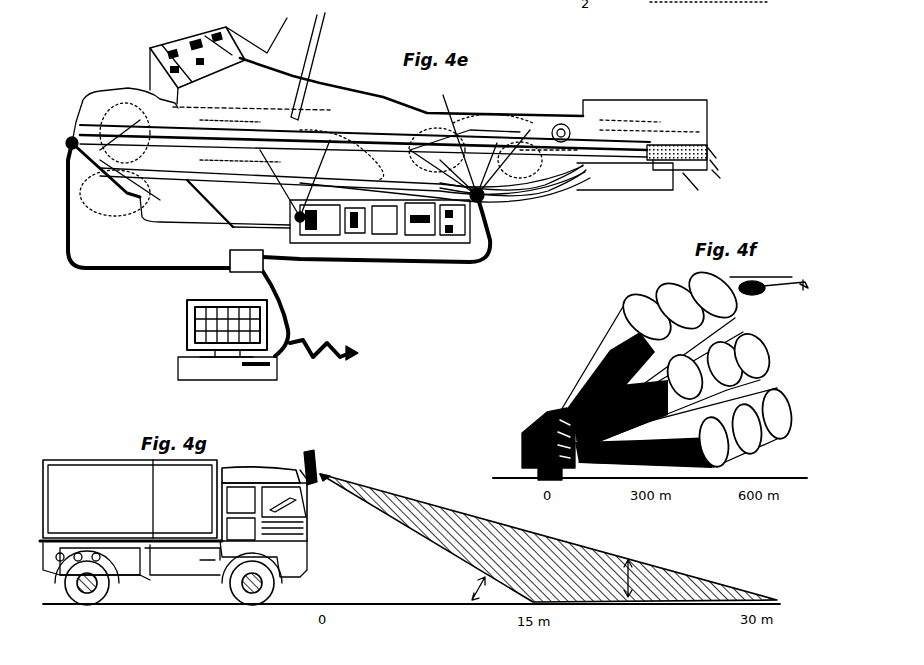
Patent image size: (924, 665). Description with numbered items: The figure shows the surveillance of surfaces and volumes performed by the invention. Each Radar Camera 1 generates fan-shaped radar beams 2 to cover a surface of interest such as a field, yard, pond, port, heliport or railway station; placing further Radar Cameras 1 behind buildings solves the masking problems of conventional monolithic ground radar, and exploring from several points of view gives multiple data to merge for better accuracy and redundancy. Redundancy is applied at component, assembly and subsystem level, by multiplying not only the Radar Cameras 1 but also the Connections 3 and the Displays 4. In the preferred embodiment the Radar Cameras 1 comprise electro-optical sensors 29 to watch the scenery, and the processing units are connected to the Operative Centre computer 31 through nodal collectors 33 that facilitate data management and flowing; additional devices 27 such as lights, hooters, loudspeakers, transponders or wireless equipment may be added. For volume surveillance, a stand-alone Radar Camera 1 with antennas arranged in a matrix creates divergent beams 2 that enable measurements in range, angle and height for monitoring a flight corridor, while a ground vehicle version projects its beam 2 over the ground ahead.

In FIG. 4e, the Radar Camera 1 is at (70, 140).
In FIG. 4f, the Radar Camera 1 is at (530, 428).
In FIG. 4g, the Radar Camera 1 is at (310, 457).
In FIG. 4e, the radar beams 2 is at (107, 203).
In FIG. 4f, the radar beams 2 is at (597, 357).
In FIG. 4g, the radar beams 2 is at (434, 510).
In FIG. 4e, the Connections 3 is at (437, 265).
In FIG. 4e, the Displays 4 is at (190, 320).
In FIG. 4e, the additional devices 27 is at (358, 355).
In FIG. 4e, the electro-optical sensors 29 is at (394, 366).
In FIG. 4e, the Operative Centre computer 31 is at (180, 365).
In FIG. 4e, the nodal collectors 33 is at (230, 267).